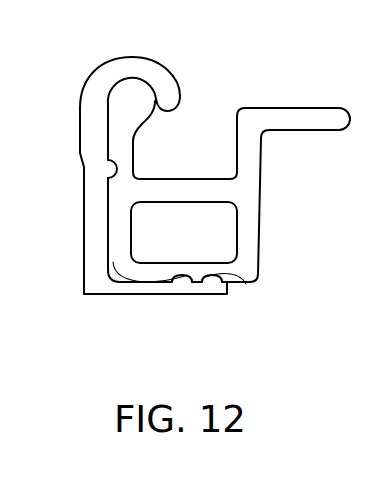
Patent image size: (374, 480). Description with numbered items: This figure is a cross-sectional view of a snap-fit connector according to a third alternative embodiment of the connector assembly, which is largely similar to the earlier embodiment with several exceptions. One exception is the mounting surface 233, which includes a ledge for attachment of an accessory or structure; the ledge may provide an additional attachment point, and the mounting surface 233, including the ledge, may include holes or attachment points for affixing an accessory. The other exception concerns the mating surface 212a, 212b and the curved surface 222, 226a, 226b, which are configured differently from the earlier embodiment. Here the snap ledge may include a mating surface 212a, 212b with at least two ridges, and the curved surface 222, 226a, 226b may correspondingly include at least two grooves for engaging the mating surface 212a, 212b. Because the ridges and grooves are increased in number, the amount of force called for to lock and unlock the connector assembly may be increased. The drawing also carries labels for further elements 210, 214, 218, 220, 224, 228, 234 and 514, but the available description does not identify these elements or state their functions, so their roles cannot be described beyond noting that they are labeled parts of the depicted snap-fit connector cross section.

The mounting bracket profile 210 is at (93, 76).
The hook portion 214 is at (120, 58).
The lip 224 is at (140, 94).
The slot 218 is at (107, 142).
The protrusion 228 is at (118, 176).
The channel 234 is at (183, 178).
The mounting surface 233 is at (285, 132).
The side wall 220 is at (261, 210).
The curved surface 222 is at (178, 262).
The mating surface 212a is at (217, 284).
The mating surface 212b is at (178, 284).
The curved surface 226a is at (246, 284).
The curved surface 226b is at (145, 283).
The element of adjacent figure 514 is at (306, 479).